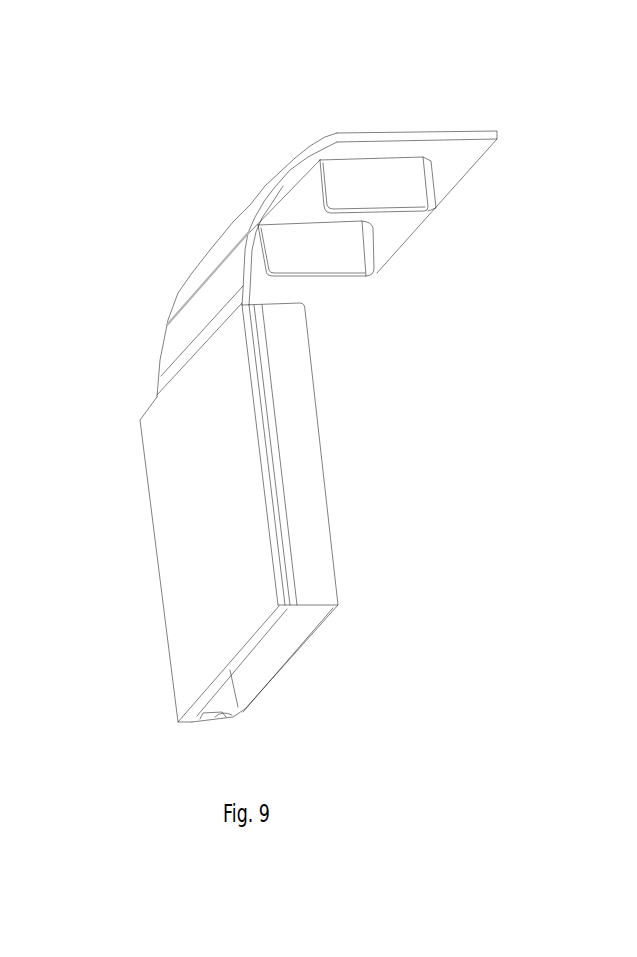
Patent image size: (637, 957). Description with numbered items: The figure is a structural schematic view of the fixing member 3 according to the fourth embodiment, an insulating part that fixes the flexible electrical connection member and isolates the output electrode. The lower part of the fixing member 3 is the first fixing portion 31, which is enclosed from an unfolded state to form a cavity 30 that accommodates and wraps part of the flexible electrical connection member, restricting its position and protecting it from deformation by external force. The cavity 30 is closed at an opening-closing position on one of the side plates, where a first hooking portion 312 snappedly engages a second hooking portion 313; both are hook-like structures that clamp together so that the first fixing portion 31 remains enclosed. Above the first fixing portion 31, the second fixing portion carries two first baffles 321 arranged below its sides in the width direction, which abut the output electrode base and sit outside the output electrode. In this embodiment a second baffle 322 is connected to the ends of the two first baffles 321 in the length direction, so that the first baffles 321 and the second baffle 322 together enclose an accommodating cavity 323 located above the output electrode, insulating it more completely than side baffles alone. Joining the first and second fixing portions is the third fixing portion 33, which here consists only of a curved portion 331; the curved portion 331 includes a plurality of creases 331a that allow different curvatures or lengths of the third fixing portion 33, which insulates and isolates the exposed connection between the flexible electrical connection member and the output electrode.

The fixing member 3 is at (250, 68).
The cavity 30 is at (277, 638).
The first fixing portion 31 is at (185, 487).
The first hooking portion 312 is at (190, 714).
The second hooking portion 313 is at (220, 714).
The first baffle 321 is at (385, 172).
The second baffle 322 is at (388, 233).
The accommodating cavity 323 is at (340, 243).
The third fixing portion 33 is at (170, 190).
The curved portion 331 is at (218, 247).
The crease 331a is at (185, 294).